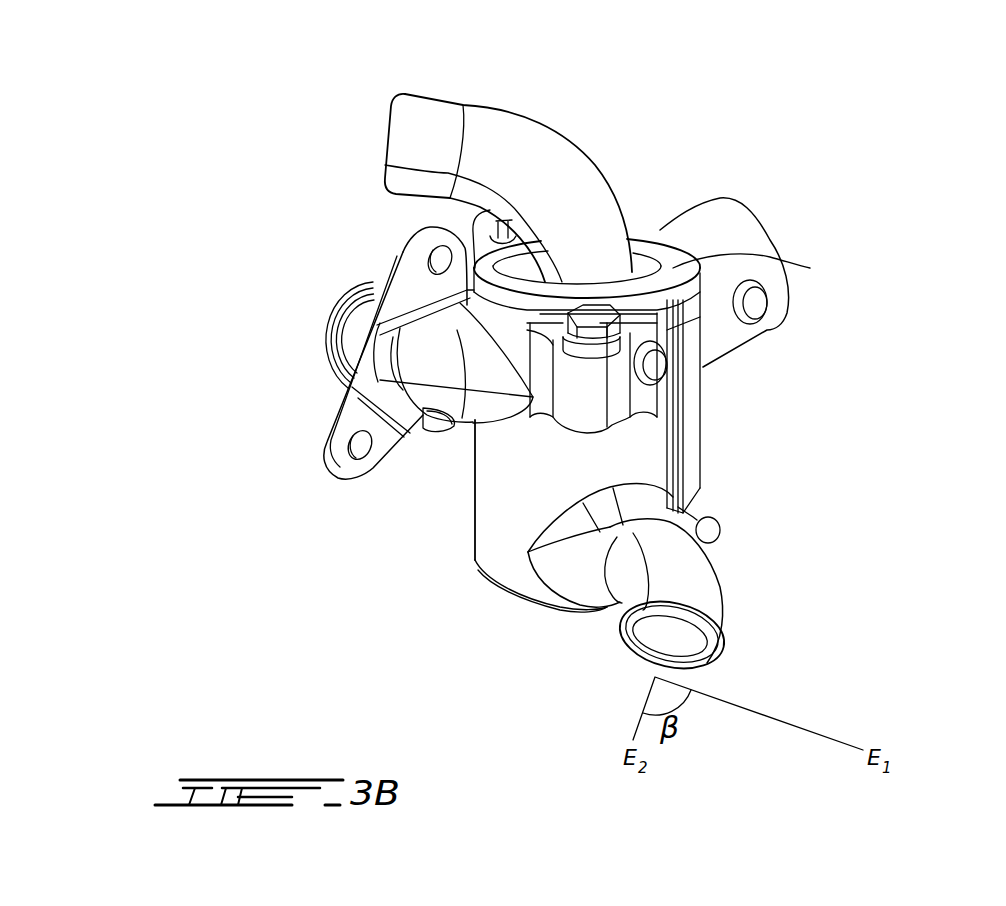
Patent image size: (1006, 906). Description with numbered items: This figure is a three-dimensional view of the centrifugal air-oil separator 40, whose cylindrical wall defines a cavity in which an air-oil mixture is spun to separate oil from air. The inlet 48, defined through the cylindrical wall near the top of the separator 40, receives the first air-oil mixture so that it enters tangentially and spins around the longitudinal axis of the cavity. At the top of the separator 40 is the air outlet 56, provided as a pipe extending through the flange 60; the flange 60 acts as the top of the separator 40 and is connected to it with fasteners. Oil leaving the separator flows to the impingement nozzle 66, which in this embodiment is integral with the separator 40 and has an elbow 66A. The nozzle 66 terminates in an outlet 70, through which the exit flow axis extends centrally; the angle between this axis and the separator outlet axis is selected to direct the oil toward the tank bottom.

The centrifugal air-oil separator 40 is at (870, 120).
The inlet 48 is at (300, 350).
The air outlet 56 is at (547, 110).
The flange 60 is at (810, 268).
The impingement nozzle 66 is at (722, 610).
The elbow 66A is at (747, 575).
The outlet 70 is at (618, 659).